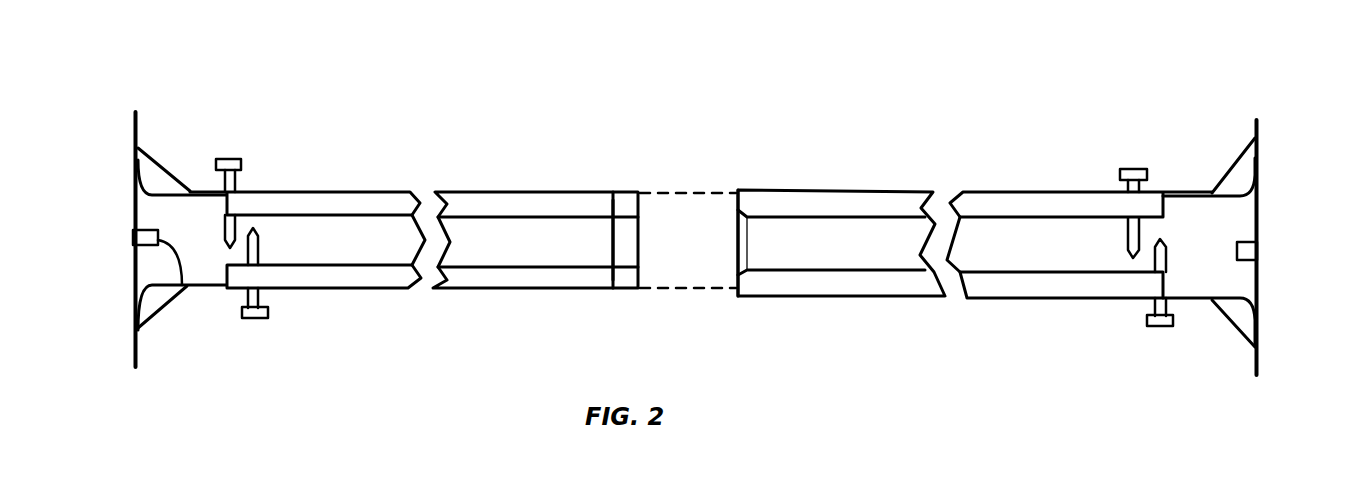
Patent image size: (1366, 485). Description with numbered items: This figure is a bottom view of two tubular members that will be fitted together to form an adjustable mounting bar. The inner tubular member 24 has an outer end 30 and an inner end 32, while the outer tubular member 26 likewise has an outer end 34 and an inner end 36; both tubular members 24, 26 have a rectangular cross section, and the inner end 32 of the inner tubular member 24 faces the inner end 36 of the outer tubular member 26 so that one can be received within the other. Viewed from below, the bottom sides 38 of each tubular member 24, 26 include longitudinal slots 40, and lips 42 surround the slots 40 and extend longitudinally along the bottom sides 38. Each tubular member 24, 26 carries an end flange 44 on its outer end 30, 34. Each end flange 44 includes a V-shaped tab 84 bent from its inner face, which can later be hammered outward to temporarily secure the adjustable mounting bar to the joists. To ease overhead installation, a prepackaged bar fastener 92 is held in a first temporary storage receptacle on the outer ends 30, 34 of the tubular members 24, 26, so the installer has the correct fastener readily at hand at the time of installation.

The inner tubular member 24 is at (568, 257).
The outer tubular member 26 is at (898, 260).
The outer end 30 is at (190, 190).
The inner end 32 is at (640, 224).
The outer end 34 is at (1212, 192).
The inner end 36 is at (735, 252).
The bottom sides 38 is at (312, 275).
The longitudinal slots 40 is at (488, 247).
The lips 42 is at (607, 280).
The end flange 44 is at (131, 119).
The V-shaped tab 84 is at (186, 290).
The bar fastener 92 is at (236, 159).